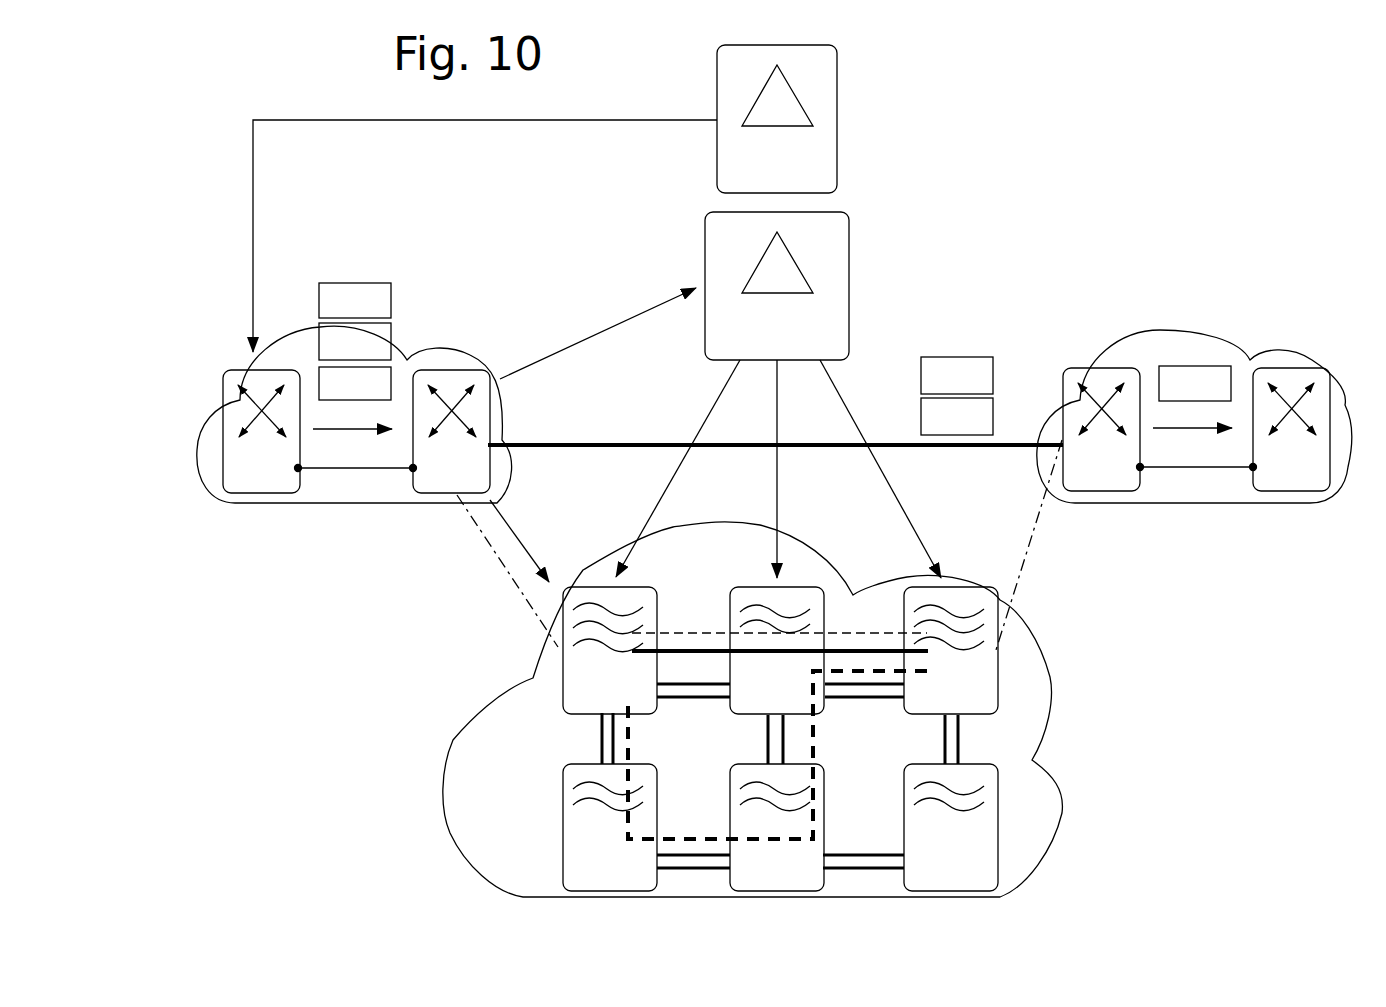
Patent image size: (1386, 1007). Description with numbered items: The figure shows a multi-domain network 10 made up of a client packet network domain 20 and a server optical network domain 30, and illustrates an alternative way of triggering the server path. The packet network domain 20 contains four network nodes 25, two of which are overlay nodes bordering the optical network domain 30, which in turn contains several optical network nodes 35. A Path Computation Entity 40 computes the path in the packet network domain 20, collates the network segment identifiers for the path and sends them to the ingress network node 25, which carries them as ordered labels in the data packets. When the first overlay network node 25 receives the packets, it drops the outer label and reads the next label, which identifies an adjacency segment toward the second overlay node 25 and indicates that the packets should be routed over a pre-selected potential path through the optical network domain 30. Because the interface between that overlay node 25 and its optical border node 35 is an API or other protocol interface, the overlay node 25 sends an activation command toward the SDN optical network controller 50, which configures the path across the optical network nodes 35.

The multi-domain network 10 is at (1112, 222).
The packet network domain 20 is at (182, 428).
The network nodes 25 is at (253, 496).
The optical network domain 30 is at (1060, 765).
The network nodes 35 is at (641, 587).
The Path Computation Entity 40 is at (837, 85).
The optical network controller 50 is at (849, 260).